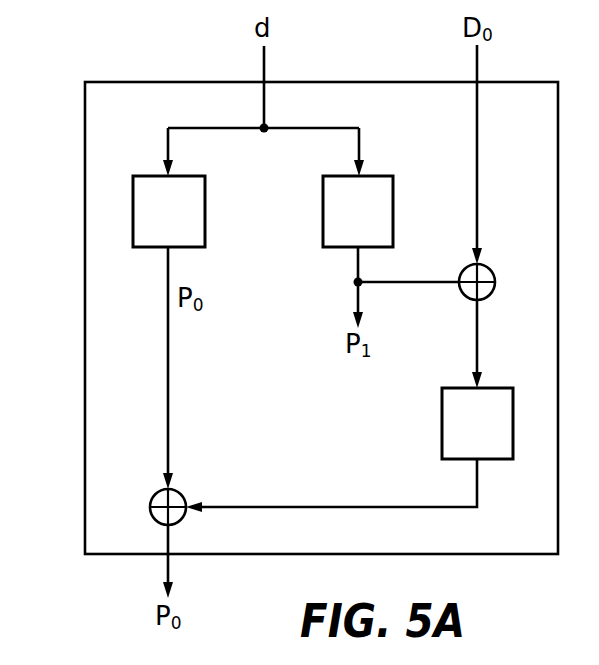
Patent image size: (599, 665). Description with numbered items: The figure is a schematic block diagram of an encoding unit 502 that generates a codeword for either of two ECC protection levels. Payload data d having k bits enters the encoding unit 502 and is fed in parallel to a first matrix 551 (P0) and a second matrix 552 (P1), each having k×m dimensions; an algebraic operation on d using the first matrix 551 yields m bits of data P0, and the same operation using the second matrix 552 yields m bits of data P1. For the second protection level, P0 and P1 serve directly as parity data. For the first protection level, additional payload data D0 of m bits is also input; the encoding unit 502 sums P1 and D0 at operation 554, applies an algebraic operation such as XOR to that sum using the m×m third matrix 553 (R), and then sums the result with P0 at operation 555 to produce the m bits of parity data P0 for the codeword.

The encoding unit 502 is at (97, 200).
The first matrix 551 is at (195, 212).
The second matrix 552 is at (384, 212).
The third matrix 553 is at (452, 425).
The summing operation 554 is at (490, 272).
The summing operation 555 is at (181, 496).